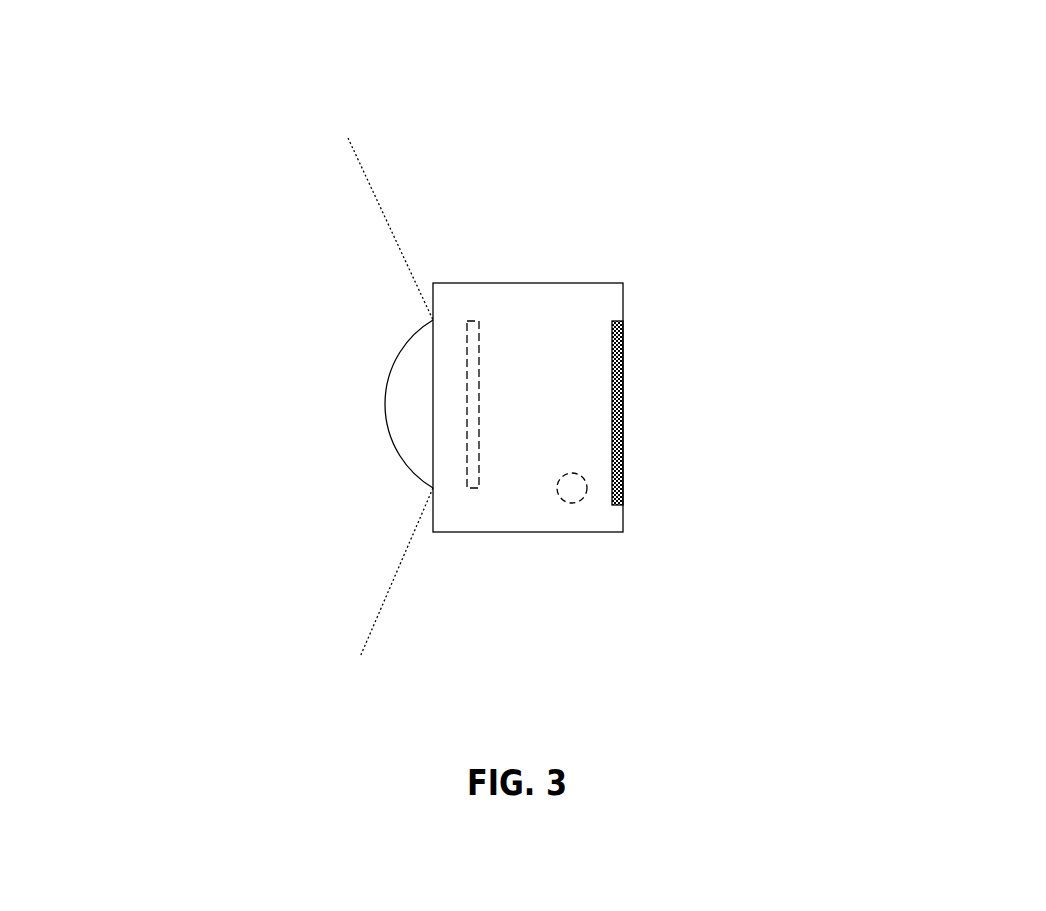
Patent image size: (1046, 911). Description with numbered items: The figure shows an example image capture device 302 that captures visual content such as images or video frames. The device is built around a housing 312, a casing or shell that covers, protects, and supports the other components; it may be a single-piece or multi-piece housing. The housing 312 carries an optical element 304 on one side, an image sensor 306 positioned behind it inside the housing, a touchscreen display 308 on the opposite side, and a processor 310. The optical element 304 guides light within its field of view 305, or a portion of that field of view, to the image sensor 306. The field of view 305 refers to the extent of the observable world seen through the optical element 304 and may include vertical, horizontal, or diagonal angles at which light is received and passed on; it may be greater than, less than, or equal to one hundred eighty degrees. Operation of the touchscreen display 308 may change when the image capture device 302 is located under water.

The image capture device 302 is at (589, 146).
The optical element 304 is at (407, 473).
The field of view 305 is at (406, 272).
The image sensor 306 is at (478, 323).
The touchscreen display 308 is at (625, 410).
The processor 310 is at (568, 503).
The housing 312 is at (497, 532).